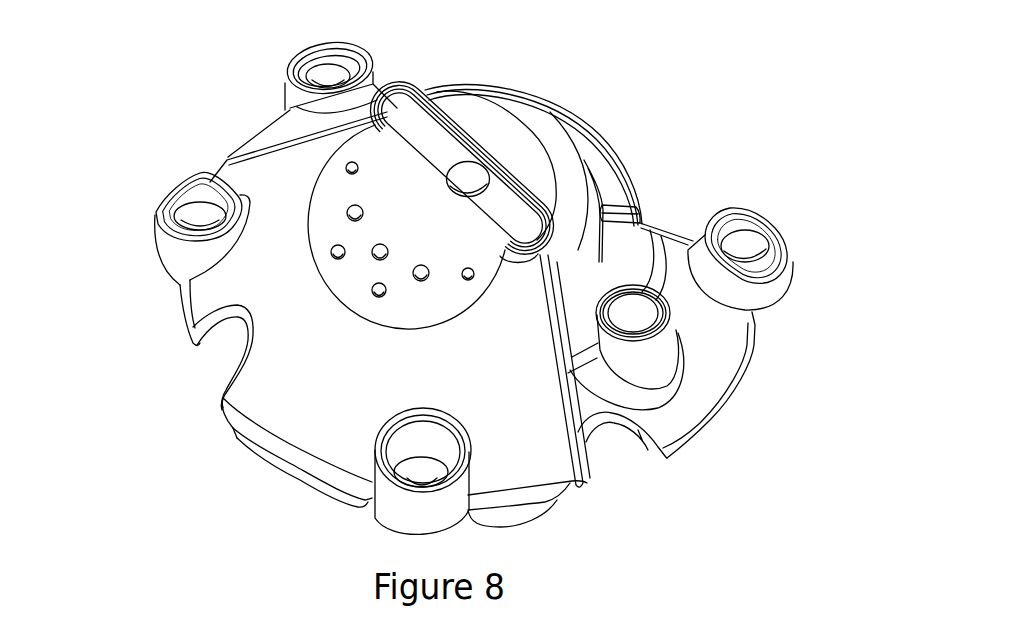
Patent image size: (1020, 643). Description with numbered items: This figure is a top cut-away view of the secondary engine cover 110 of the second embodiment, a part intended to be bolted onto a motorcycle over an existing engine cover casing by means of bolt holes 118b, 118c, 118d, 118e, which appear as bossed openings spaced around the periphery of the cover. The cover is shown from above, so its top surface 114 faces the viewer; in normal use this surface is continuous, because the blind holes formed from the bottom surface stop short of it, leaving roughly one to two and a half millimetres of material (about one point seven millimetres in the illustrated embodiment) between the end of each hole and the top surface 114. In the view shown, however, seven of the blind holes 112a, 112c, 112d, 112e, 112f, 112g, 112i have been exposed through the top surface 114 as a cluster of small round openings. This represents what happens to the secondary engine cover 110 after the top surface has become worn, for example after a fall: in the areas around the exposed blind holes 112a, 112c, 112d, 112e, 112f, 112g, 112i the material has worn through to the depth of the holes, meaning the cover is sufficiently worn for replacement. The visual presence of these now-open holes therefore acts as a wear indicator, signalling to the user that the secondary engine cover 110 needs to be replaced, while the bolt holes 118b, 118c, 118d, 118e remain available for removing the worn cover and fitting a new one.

The secondary engine cover 110 is at (622, 105).
The blind hole 112a is at (468, 279).
The blind hole 112c is at (421, 280).
The blind hole 112d is at (376, 296).
The blind hole 112e is at (374, 259).
The blind hole 112f is at (334, 255).
The blind hole 112g is at (350, 215).
The blind hole 112i is at (348, 169).
The top surface 114 is at (307, 427).
The bolt hole 118b is at (195, 225).
The bolt hole 118c is at (324, 73).
The bolt hole 118d is at (749, 255).
The bolt hole 118e is at (642, 320).